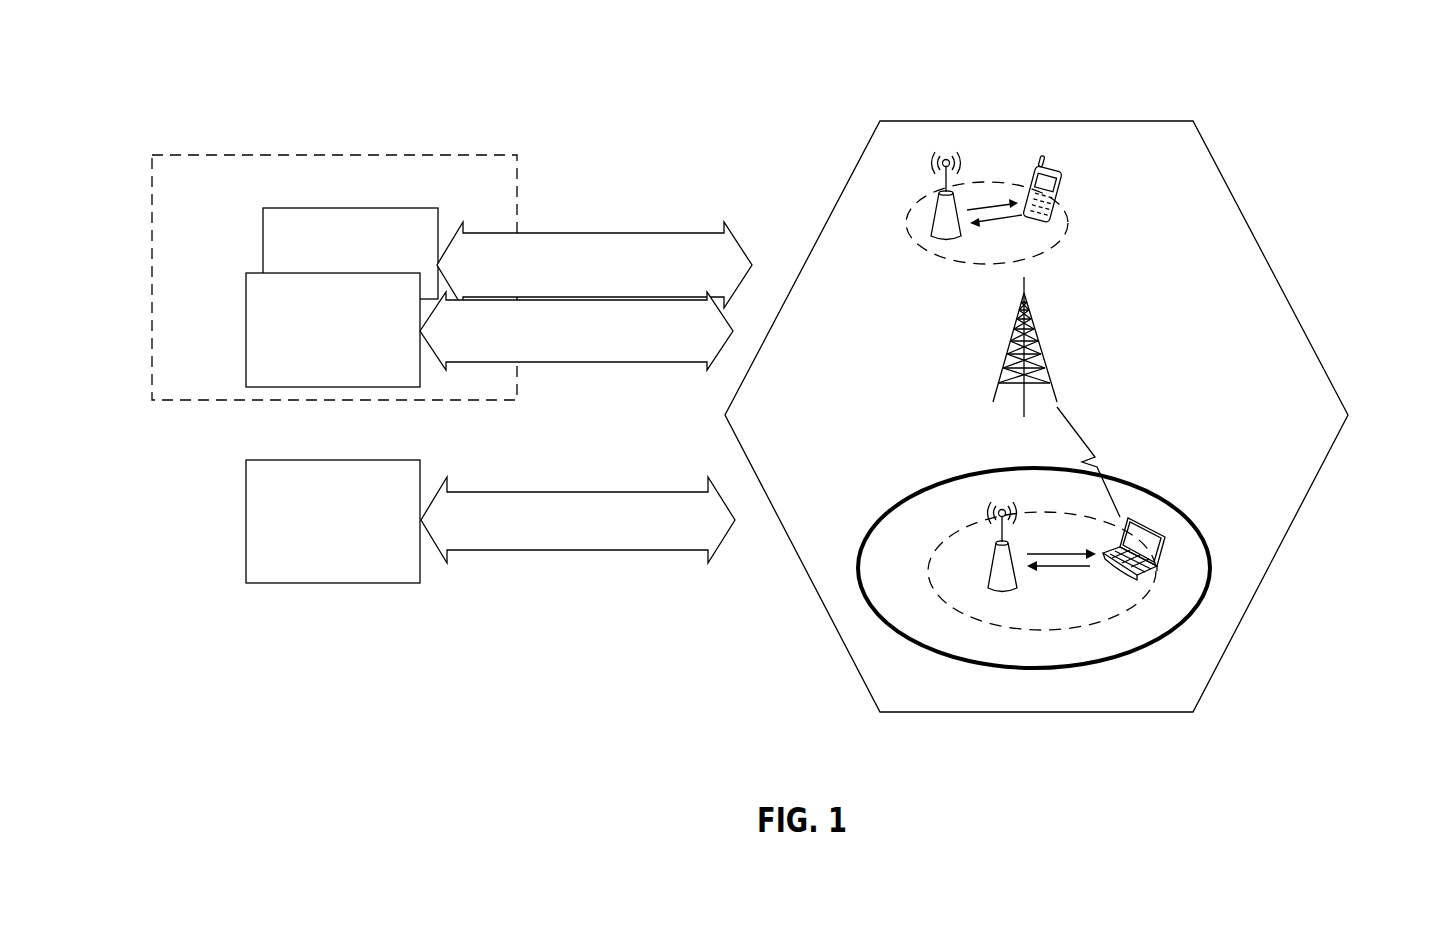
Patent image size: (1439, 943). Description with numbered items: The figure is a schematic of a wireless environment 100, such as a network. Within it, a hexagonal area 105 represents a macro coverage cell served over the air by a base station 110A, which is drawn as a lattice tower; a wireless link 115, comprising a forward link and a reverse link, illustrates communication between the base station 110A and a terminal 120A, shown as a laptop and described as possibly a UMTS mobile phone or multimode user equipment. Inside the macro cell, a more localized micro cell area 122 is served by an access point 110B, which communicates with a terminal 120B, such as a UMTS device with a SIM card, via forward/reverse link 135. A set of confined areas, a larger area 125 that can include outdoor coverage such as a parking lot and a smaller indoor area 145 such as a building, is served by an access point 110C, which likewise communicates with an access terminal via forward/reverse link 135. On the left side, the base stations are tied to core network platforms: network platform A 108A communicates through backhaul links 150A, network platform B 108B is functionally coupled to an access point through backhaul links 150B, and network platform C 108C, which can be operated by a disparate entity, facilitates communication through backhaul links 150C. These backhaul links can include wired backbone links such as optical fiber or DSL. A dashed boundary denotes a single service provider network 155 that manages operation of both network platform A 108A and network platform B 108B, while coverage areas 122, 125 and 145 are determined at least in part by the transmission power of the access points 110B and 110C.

The wireless environment 100 is at (1342, 68).
The macro cell coverage area 105 is at (1265, 257).
The network platform A 108A is at (263, 243).
The network platform B 108B is at (358, 367).
The network platform C 108C is at (358, 566).
The base station 110A is at (1035, 332).
The access point 110B is at (938, 197).
The access point 110C is at (992, 553).
The wireless link 115 is at (1096, 457).
The terminal 120A is at (1140, 518).
The terminal 120B is at (1047, 170).
The micro cell coverage area 122 is at (930, 250).
The larger confined coverage area 125 is at (1205, 555).
The forward/reverse link 135 is at (982, 206).
The smaller confined coverage area 145 is at (1085, 620).
The backhaul link(s) 150A is at (649, 233).
The backhaul link(s) 150B is at (648, 362).
The backhaul link(s) 150C is at (630, 490).
The service provider network 155 is at (332, 155).